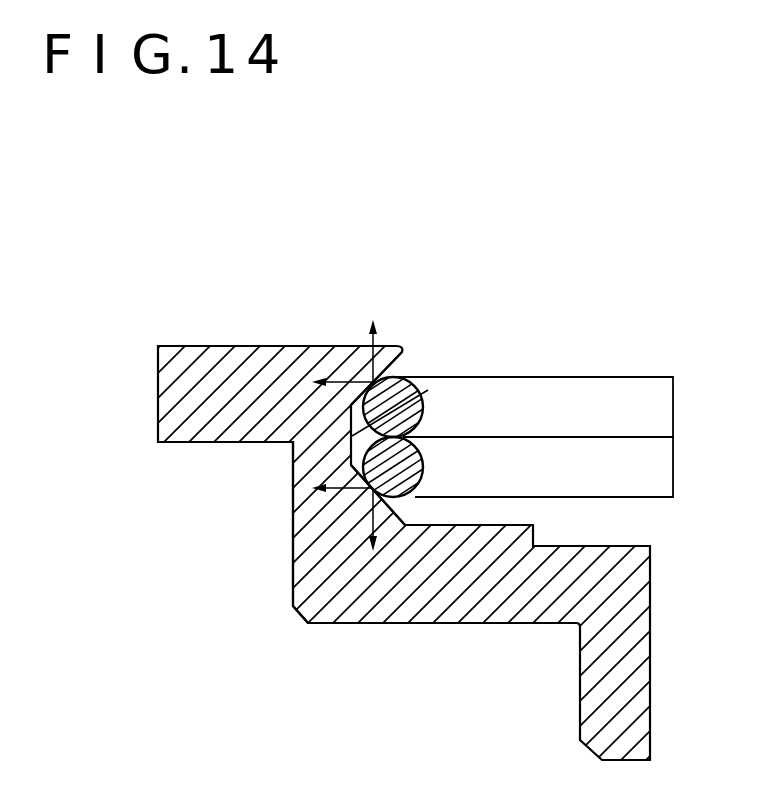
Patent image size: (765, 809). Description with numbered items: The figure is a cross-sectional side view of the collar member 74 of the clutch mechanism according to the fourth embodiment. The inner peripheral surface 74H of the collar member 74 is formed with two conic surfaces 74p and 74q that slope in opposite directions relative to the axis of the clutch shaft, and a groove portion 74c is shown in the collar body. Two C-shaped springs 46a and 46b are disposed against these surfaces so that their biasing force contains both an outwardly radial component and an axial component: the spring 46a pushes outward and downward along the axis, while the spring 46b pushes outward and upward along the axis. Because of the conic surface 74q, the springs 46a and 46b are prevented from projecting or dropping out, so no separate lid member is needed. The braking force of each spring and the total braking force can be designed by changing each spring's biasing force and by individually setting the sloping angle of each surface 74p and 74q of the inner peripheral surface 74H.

The collar member 74 is at (150, 380).
The conic surface 74q is at (394, 371).
The conic surface 74p is at (408, 496).
The groove portion 74c is at (320, 518).
The inner peripheral surface 74H is at (398, 408).
The C-shaped spring 46a is at (633, 493).
The C-shaped spring 46b is at (553, 403).